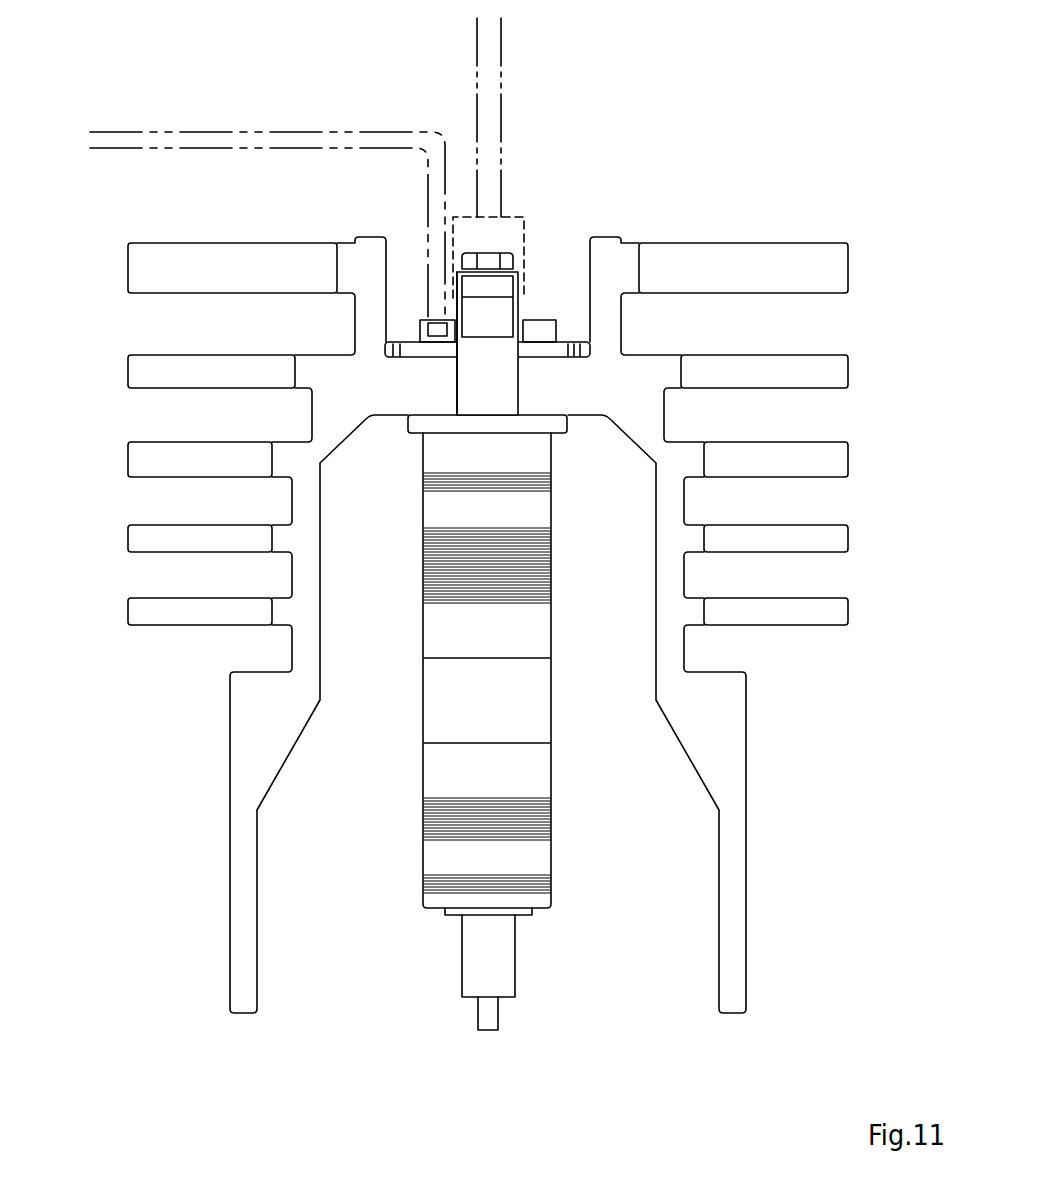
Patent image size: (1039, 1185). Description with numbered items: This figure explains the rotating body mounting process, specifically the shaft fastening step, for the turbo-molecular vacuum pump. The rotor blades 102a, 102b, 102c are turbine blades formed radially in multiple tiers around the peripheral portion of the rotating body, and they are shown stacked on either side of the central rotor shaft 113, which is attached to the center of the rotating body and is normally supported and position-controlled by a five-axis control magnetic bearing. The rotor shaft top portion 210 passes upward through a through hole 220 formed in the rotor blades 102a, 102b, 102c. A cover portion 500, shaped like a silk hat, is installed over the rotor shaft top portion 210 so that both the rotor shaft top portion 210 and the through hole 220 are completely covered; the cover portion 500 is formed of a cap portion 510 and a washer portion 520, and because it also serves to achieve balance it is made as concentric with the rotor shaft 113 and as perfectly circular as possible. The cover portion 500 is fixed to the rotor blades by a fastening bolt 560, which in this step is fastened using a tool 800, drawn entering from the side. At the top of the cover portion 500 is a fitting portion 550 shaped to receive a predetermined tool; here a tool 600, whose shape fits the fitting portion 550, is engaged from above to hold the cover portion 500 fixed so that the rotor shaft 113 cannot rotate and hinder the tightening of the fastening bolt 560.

The rotor blade 102a is at (138, 268).
The rotor blade 102b is at (138, 376).
The rotor blade 102c is at (138, 466).
The rotor shaft 113 is at (538, 512).
The rotor shaft top portion 210 is at (471, 318).
The through hole 220 is at (520, 387).
The cover portion 500 is at (479, 248).
The cap portion 510 is at (520, 291).
The washer portion 520 is at (560, 347).
The fitting portion 550 is at (488, 256).
The fastening bolt 560 is at (540, 327).
The tool 600 is at (498, 64).
The tool 800 is at (247, 142).